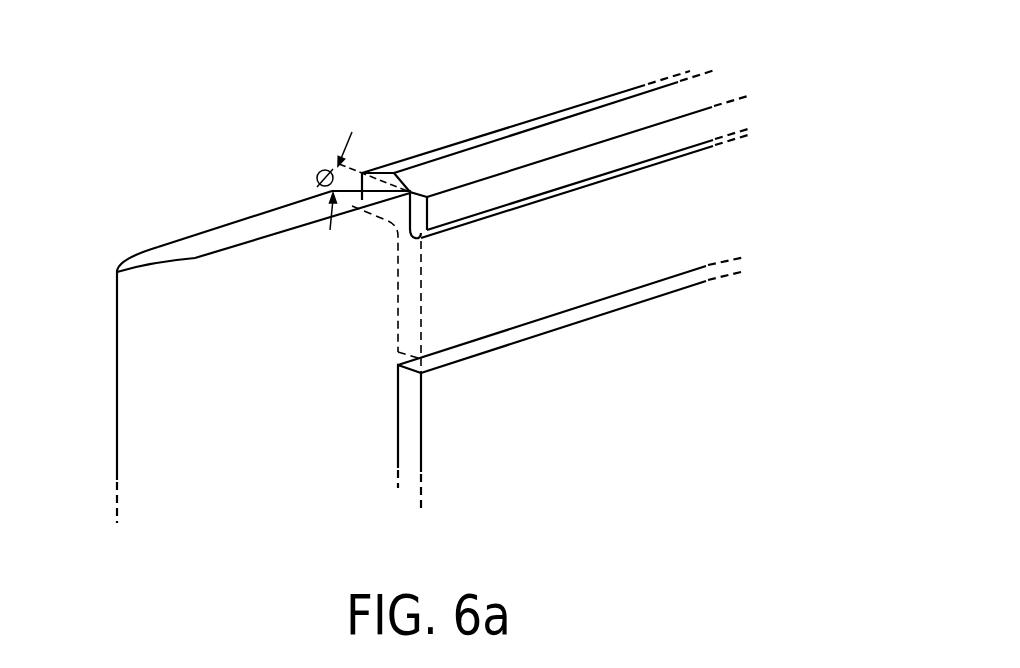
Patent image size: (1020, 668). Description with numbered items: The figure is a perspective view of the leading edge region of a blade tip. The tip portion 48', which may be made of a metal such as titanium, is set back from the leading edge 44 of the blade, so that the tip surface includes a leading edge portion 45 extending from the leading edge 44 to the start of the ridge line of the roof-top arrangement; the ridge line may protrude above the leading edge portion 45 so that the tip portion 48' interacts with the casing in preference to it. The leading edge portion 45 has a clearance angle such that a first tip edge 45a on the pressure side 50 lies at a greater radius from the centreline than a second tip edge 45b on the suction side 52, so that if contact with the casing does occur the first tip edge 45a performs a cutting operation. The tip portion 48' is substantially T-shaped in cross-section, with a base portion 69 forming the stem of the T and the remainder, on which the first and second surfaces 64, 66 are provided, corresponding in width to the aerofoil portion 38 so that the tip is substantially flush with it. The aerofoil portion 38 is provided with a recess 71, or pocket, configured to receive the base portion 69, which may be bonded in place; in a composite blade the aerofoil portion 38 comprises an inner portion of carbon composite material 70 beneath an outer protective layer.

The tip portion 48' is at (555, 121).
The first surface 64 is at (429, 157).
The second surface 66 is at (488, 160).
The recess 71 is at (709, 211).
The leading edge portion 45 is at (278, 215).
The second tip edge 45b is at (228, 223).
The first tip edge 45a is at (255, 241).
The suction side 52 is at (158, 246).
The leading edge 44 is at (132, 349).
The base portion 69 is at (408, 317).
The pressure side 50 is at (255, 420).
The inner portion of carbon composite material 70 is at (612, 420).
The aerofoil portion 38 is at (474, 446).